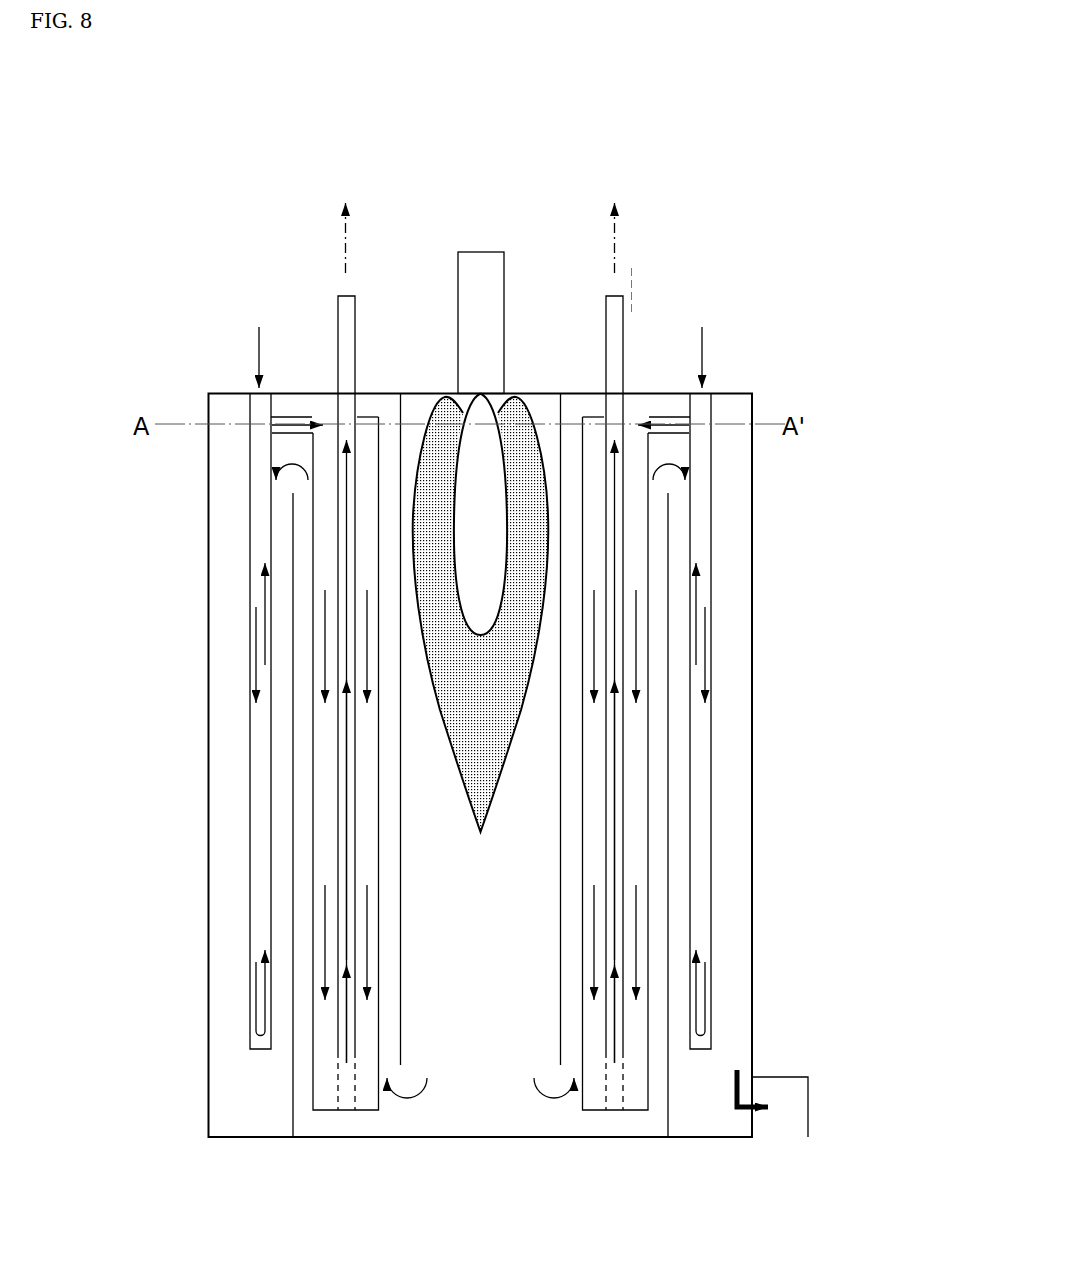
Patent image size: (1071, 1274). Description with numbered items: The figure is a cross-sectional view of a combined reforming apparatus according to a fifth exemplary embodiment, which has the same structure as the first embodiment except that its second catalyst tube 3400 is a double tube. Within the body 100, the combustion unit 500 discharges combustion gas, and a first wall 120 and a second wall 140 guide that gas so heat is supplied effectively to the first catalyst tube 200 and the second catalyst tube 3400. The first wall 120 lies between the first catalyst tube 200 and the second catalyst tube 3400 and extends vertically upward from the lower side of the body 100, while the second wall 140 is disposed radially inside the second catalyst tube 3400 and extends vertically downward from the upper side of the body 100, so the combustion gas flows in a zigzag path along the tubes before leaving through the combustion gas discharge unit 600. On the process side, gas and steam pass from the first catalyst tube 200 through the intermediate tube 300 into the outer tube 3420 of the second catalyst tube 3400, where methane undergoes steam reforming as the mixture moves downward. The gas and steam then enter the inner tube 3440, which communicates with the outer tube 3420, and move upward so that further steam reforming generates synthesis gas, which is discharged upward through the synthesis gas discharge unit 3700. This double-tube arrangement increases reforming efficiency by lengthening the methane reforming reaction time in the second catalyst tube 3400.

The body 100 is at (559, 766).
The first catalyst tube 200 is at (572, 766).
The intermediate tube 300 is at (278, 436).
The first wall 120 is at (293, 897).
The second wall 140 is at (392, 660).
The second catalyst tube 3400 is at (339, 703).
The outer tube 3420 is at (312, 750).
The inner tube 3440 is at (333, 832).
The synthesis gas discharge unit 3700 is at (492, 226).
The combustion unit 500 is at (475, 458).
The combustion gas discharge unit 600 is at (842, 1036).